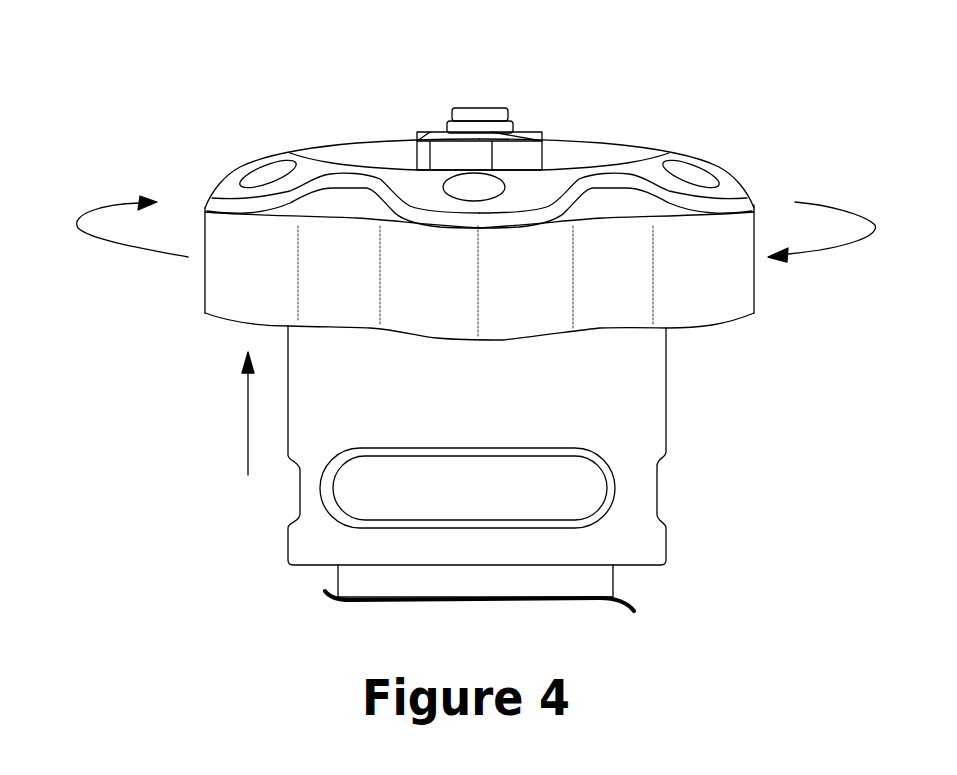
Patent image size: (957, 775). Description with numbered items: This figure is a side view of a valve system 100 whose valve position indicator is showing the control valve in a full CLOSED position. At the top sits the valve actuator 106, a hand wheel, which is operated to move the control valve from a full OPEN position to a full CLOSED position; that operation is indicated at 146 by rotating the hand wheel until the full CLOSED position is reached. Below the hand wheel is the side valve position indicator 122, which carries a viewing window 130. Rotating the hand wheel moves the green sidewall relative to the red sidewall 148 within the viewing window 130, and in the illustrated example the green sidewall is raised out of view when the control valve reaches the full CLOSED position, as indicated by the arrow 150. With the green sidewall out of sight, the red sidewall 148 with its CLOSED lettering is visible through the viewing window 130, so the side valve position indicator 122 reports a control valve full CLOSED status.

The valve system 100 is at (170, 97).
The valve actuator 106 is at (722, 170).
The side valve position indicator 122 is at (182, 495).
The viewing window 130 is at (368, 497).
The rotation of hand wheel 146 is at (110, 239).
The red sidewall 148 is at (576, 482).
The arrow 150 is at (247, 407).